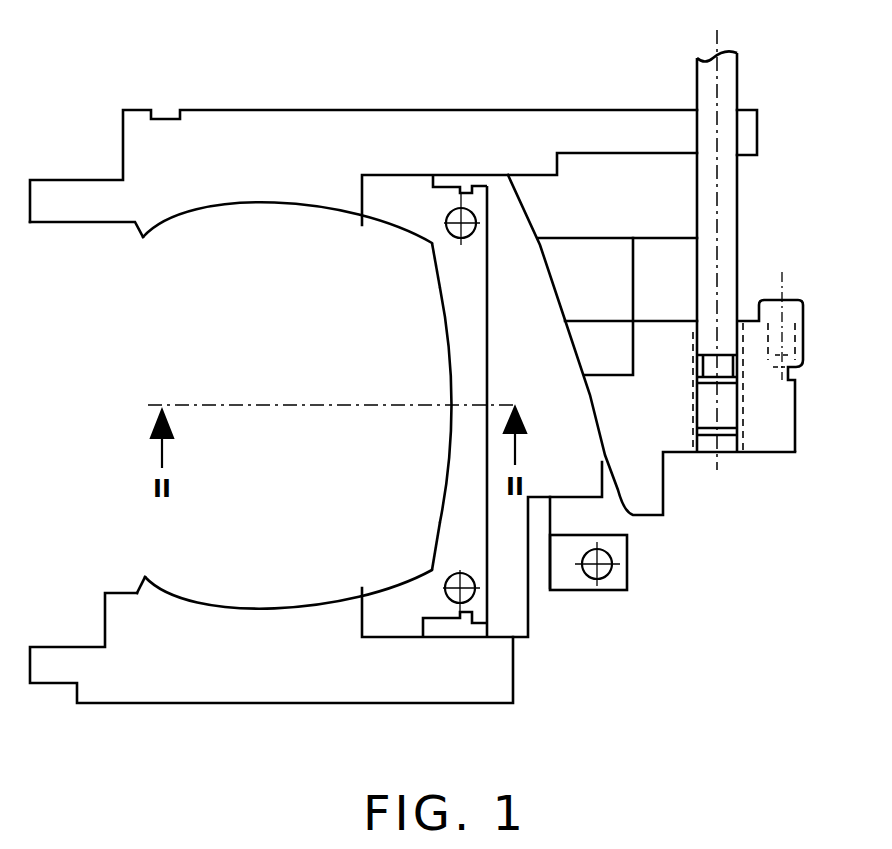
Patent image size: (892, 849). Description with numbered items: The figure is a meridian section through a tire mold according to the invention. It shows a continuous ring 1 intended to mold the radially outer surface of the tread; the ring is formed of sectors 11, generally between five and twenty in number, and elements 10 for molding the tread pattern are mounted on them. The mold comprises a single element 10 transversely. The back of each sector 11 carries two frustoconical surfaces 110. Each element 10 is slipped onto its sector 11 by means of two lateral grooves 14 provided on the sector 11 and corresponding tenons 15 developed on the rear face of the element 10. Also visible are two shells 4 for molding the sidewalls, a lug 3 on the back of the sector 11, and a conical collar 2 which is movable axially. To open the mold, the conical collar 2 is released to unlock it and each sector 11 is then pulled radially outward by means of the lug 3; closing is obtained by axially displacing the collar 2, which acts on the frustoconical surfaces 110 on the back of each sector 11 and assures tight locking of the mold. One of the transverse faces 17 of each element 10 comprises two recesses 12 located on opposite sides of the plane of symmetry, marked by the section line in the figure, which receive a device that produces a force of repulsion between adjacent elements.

The continuous ring 1 is at (413, 365).
The conical collar 2 is at (768, 403).
The lug 3 is at (618, 572).
The shells 4 is at (227, 152).
The element 10 is at (462, 448).
The sector 11 is at (503, 528).
The recesses 12 is at (466, 210).
The lateral grooves 14 is at (432, 175).
The tenons 15 is at (480, 190).
The transverse face 17 is at (455, 283).
The frustoconical surfaces 110 is at (737, 238).